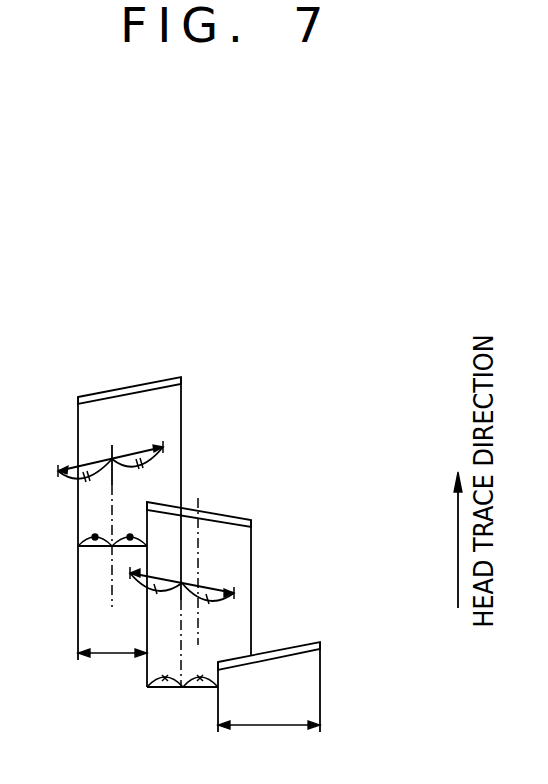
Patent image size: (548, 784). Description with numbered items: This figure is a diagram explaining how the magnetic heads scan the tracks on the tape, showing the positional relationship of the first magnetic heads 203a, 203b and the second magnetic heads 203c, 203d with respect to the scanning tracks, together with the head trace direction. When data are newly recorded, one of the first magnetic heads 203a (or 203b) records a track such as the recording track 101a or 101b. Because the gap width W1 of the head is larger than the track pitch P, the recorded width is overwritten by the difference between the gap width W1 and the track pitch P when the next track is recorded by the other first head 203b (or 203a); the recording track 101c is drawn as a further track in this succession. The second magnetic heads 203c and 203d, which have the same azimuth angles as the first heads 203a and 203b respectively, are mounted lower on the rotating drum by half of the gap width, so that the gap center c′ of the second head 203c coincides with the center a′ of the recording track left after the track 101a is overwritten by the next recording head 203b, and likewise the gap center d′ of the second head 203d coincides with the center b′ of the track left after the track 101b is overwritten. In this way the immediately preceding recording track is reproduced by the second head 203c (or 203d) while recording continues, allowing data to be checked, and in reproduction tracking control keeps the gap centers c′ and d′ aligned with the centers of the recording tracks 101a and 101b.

The recording track 101a is at (98, 406).
The recording track 101b is at (237, 550).
The third track 101c is at (303, 684).
The first magnetic head 203a is at (167, 374).
The first magnetic head 203b is at (222, 513).
The second magnetic head 203c is at (143, 449).
The second magnetic head 203d is at (218, 588).
The center of recording track a′ is at (112, 546).
The center of recording track b′ is at (183, 689).
The gap center of second magnetic head c′ is at (112, 459).
The gap center of second magnetic head d′ is at (182, 588).
The track pitch P is at (112, 637).
The gap width W1 is at (269, 710).